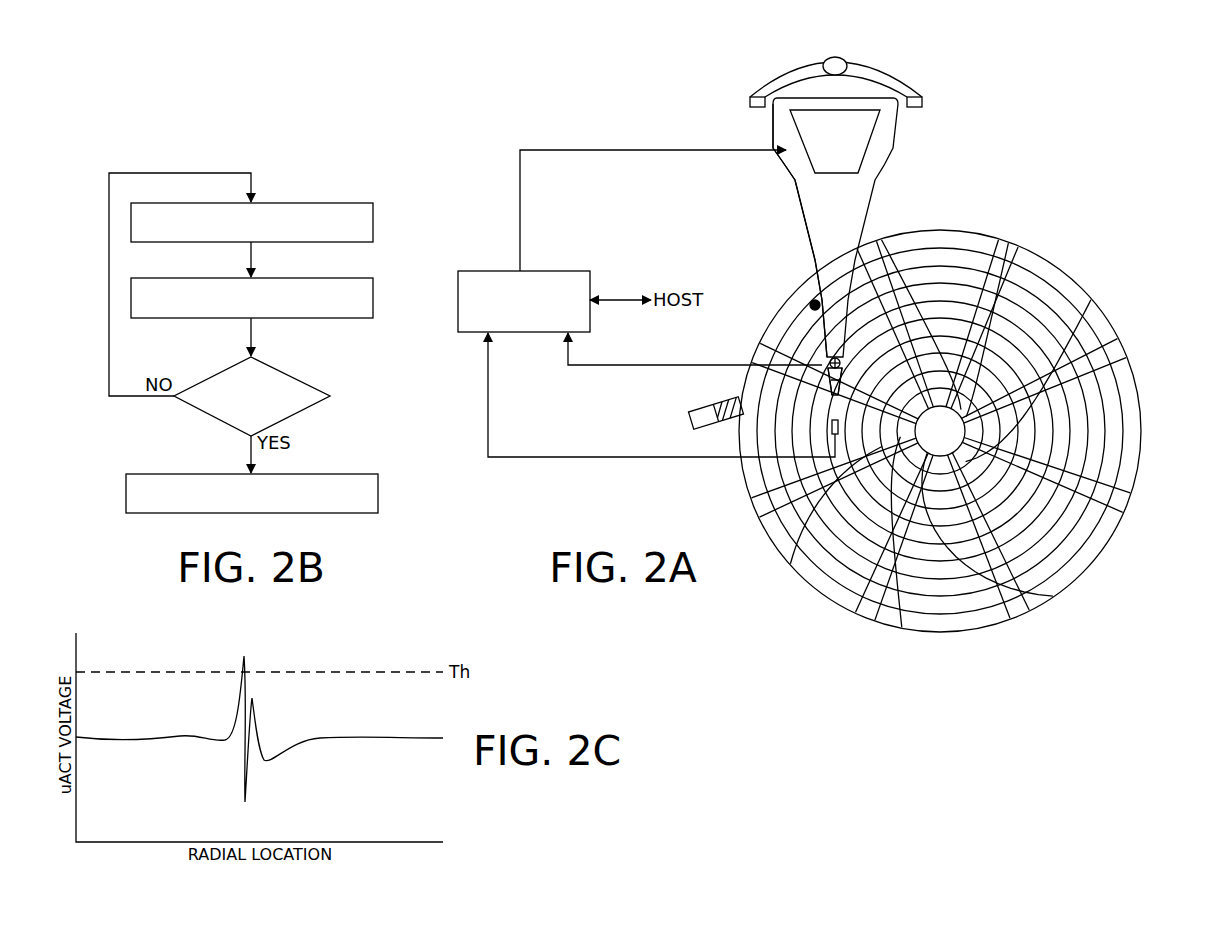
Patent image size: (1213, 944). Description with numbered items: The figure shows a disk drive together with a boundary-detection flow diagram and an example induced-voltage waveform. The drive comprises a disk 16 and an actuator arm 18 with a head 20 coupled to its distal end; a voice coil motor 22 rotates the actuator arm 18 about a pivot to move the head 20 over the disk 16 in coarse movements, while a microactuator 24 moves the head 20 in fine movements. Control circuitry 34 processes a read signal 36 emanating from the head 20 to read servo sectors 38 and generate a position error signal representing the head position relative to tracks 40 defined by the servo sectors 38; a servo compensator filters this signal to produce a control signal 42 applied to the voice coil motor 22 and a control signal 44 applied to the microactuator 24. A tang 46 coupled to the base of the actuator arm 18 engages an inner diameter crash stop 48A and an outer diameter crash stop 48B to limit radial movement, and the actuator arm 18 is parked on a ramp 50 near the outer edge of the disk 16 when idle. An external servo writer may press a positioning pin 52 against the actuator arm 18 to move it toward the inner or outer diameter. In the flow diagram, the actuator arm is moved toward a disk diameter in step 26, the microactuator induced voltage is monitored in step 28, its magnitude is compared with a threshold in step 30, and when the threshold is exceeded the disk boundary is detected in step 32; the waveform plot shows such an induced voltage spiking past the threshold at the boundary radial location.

In FIG. 2A, the disk 16 is at (1080, 275).
In FIG. 2A, the actuator arm 18 is at (822, 237).
In FIG. 2A, the head 20 is at (829, 423).
In FIG. 2A, the voice coil motor 22 is at (781, 129).
In FIG. 2A, the microactuator 24 is at (846, 361).
In FIG. 2B, the move actuator arm step 26 is at (330, 242).
In FIG. 2B, the monitor microactuator voltage step 28 is at (330, 318).
In FIG. 2B, the threshold comparison step 30 is at (305, 416).
In FIG. 2B, the detect disk boundary step 32 is at (345, 513).
In FIG. 2A, the control circuitry 34 is at (558, 271).
In FIG. 2A, the read signal 36 is at (610, 457).
In FIG. 2A, the servo sectors 38 is at (1014, 243).
In FIG. 2A, the tracks 40 is at (940, 256).
In FIG. 2A, the VCM control signal 42 is at (520, 227).
In FIG. 2A, the microactuator control signal 44 is at (665, 365).
In FIG. 2A, the tang 46 is at (837, 99).
In FIG. 2A, the inner diameter crash stop 48A is at (756, 101).
In FIG. 2A, the outer diameter crash stop 48B is at (916, 101).
In FIG. 2A, the ramp 50 is at (699, 420).
In FIG. 2A, the positioning pin 52 is at (810, 302).